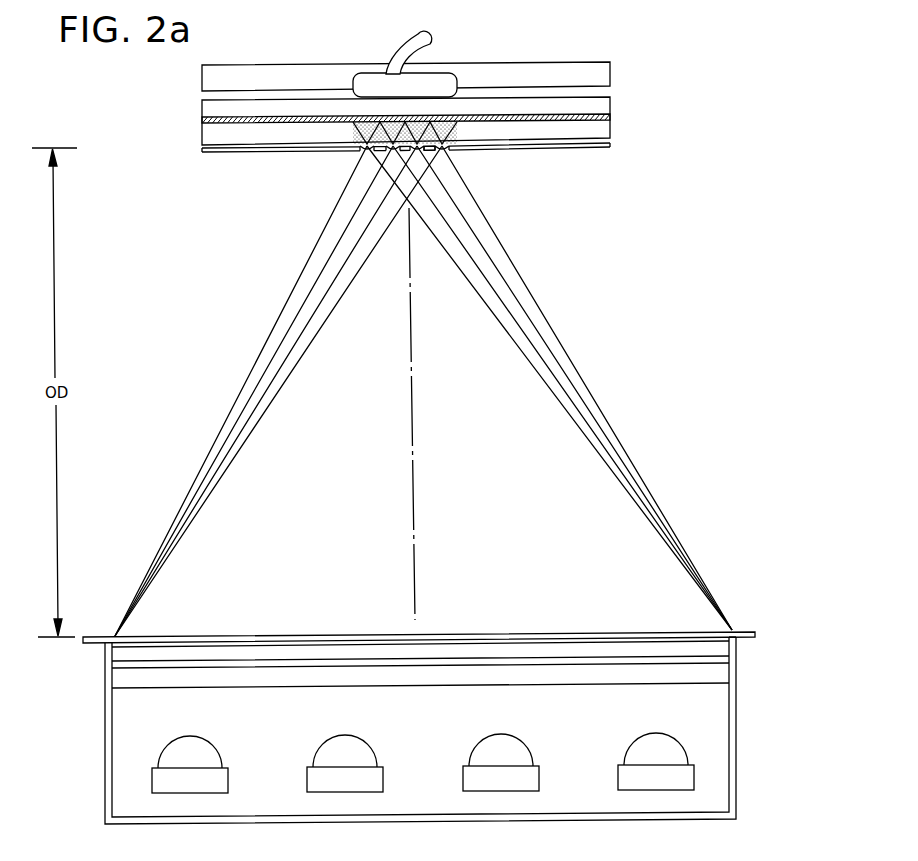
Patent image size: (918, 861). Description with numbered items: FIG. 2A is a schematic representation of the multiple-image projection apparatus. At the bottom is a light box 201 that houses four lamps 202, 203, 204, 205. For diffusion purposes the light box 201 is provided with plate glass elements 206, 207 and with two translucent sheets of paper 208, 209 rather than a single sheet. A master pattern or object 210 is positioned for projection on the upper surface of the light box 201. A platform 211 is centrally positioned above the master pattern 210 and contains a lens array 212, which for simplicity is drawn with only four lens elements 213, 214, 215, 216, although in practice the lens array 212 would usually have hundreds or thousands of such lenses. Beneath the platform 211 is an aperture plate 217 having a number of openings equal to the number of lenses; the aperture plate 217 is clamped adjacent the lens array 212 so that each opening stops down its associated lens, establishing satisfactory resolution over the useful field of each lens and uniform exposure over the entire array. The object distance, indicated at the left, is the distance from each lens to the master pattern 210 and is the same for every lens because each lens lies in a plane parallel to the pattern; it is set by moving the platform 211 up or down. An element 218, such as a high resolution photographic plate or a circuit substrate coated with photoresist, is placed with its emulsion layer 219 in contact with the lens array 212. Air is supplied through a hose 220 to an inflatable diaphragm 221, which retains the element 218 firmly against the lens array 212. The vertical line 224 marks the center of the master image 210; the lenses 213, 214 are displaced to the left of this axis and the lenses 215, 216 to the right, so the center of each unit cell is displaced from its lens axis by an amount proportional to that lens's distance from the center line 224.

The light box 201 is at (107, 736).
The lamp 202 is at (210, 752).
The lamp 203 is at (365, 750).
The lamp 204 is at (517, 747).
The lamp 205 is at (667, 743).
The plate glass element 206 is at (717, 650).
The plate glass element 207 is at (717, 676).
The translucent sheet of paper 208 is at (490, 643).
The translucent sheet of paper 209 is at (565, 662).
The master pattern 210 is at (737, 632).
The platform 211 is at (600, 130).
The lens array 212 is at (357, 136).
The lens element 213 is at (380, 147).
The lens element 214 is at (395, 150).
The lens element 215 is at (430, 153).
The lens element 216 is at (447, 148).
The aperture plate 217 is at (612, 147).
The element 218 is at (608, 103).
The emulsion layer 219 is at (608, 116).
The hose 220 is at (403, 50).
The inflatable diaphragm 221 is at (435, 80).
The vertical line 224 is at (413, 440).